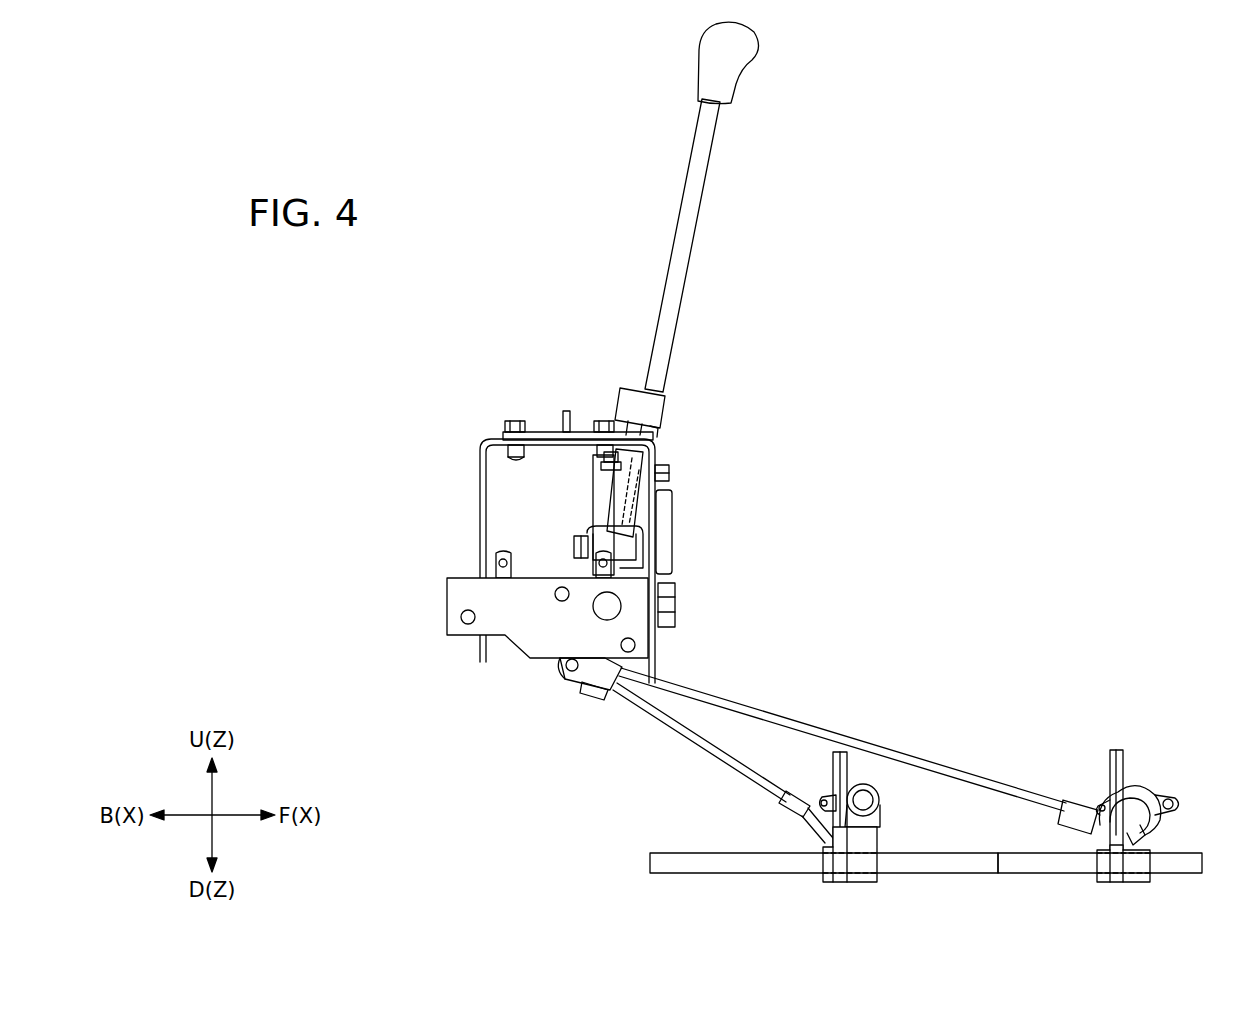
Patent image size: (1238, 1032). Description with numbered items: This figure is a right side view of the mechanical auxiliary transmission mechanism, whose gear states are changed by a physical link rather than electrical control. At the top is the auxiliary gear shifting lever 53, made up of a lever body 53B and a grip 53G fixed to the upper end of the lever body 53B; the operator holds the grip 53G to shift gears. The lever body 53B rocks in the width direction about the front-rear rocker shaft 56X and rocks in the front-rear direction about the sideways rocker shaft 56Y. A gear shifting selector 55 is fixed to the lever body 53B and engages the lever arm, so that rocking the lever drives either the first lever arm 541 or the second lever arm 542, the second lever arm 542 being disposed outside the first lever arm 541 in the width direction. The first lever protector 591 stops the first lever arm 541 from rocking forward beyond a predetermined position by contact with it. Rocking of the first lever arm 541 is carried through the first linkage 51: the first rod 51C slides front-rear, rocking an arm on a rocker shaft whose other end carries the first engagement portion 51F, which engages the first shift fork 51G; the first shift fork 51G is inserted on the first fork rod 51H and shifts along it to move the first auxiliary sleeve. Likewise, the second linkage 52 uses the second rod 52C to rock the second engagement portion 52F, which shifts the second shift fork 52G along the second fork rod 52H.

The auxiliary gear shifting lever 53 is at (758, 207).
The grip 53G is at (722, 80).
The lever body 53B is at (708, 132).
The first lever arm 541 is at (651, 505).
The second lever arm 542 is at (604, 478).
The gear shifting selector 55 is at (668, 470).
The first lever protector 591 is at (665, 548).
The front-rear rocker shaft 56X is at (590, 547).
The sideways rocker shaft 56Y is at (612, 603).
The first linkage 51 is at (910, 780).
The first rod 51C is at (932, 773).
The first engagement portion 51F is at (1135, 798).
The first shift fork 51G is at (1118, 872).
The first fork rod 51H is at (1040, 873).
The second linkage 52 is at (765, 805).
The second rod 52C is at (672, 740).
The second engagement portion 52F is at (858, 797).
The second shift fork 52G is at (842, 872).
The second fork rod 52H is at (720, 873).